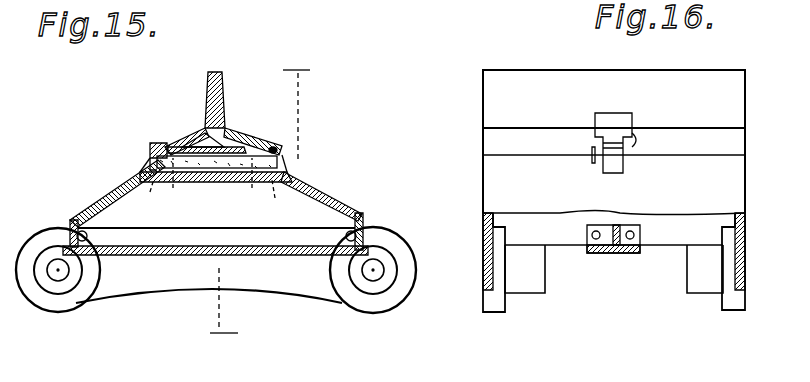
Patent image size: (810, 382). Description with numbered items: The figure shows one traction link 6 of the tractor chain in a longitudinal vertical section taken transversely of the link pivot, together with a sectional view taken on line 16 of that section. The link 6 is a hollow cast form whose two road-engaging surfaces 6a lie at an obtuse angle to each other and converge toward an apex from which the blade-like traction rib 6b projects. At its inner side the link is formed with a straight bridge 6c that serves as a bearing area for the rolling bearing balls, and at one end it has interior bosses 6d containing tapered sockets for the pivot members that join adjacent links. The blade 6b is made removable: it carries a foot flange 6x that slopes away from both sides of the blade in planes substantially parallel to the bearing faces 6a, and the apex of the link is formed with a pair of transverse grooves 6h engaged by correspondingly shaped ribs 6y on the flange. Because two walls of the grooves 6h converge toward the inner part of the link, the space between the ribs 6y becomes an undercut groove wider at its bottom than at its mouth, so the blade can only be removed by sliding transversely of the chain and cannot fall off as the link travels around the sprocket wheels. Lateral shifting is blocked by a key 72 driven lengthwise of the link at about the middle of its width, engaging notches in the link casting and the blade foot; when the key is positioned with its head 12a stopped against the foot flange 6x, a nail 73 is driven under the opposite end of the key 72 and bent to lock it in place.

In FIG. 15, the traction link 6 is at (286, 191).
In FIG. 16, the traction link 6 is at (614, 171).
In FIG. 15, the road-engaging surfaces 6a is at (333, 176).
In FIG. 15, the traction rib 6b is at (221, 73).
In FIG. 16, the traction rib 6b is at (495, 77).
In FIG. 15, the bridge 6c is at (168, 256).
In FIG. 16, the bridge 6c is at (608, 255).
In FIG. 15, the interior bosses 6d is at (70, 287).
In FIG. 16, the interior bosses 6d is at (703, 287).
In FIG. 15, the transverse grooves 6h is at (210, 187).
In FIG. 15, the foot flange 6x is at (237, 127).
In FIG. 15, the ribs 6y is at (211, 202).
In FIG. 15, the clamp lug 12a is at (152, 157).
In FIG. 15, the section line 16 is at (263, 205).
In FIG. 15, the key 72 is at (213, 163).
In FIG. 16, the key 72 is at (612, 167).
In FIG. 15, the nail 73 is at (277, 148).
In FIG. 16, the nail 73 is at (637, 147).